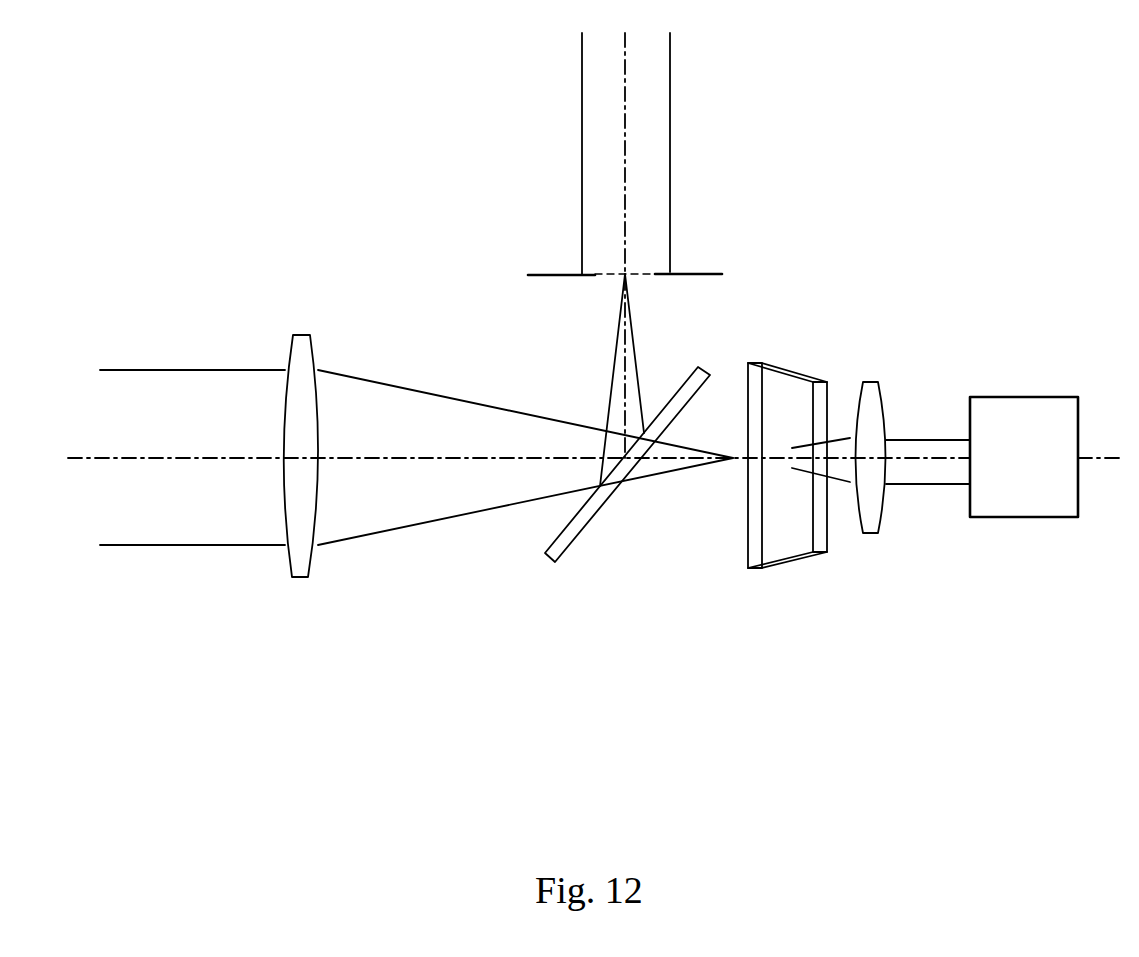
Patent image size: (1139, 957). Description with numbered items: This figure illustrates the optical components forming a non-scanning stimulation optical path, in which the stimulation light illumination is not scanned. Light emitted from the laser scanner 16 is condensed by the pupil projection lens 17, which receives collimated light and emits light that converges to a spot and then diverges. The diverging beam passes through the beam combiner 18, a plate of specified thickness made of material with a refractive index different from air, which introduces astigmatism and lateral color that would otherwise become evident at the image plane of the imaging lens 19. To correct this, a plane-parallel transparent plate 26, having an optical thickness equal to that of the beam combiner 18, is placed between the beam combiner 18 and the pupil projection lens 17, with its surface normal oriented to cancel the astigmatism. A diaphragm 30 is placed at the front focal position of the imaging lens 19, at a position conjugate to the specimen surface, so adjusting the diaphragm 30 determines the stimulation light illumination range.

The first laser scanner 16 is at (1018, 517).
The first pupil projection lens 17 is at (858, 533).
The beam combiner 18 is at (585, 532).
The imaging lens 19 is at (308, 577).
The plane-parallel transparent plate 26 is at (775, 563).
The diaphragm 30 is at (548, 273).